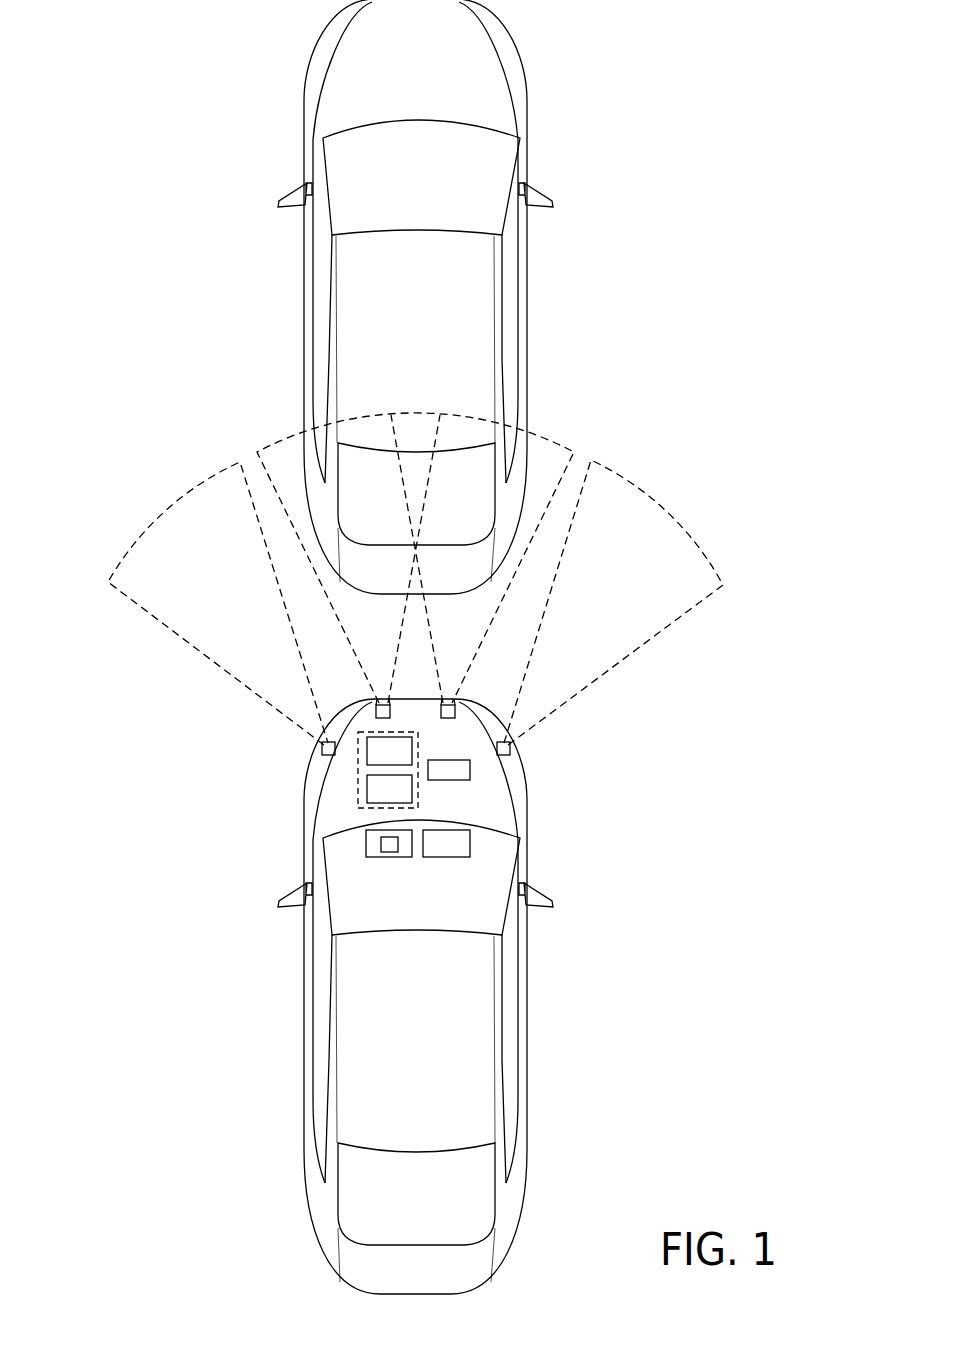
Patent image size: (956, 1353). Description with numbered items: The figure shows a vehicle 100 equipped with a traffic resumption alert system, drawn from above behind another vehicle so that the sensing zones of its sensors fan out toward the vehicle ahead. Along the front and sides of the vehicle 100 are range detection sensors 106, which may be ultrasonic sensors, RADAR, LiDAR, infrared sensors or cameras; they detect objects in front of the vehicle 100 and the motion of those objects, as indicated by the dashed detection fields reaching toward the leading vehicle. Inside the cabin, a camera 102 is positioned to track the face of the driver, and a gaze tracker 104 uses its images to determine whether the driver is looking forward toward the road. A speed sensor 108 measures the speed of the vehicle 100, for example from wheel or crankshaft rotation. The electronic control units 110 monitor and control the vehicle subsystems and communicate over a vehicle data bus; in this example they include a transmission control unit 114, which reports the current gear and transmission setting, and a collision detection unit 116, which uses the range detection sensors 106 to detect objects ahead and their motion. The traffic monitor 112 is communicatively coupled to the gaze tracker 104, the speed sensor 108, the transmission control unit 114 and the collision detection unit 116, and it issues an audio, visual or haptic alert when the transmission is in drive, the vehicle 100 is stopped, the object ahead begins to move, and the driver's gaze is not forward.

The vehicle 100 is at (526, 1158).
The camera 102 is at (390, 853).
The gaze tracker 104 is at (372, 858).
The range detection sensors 106 is at (385, 703).
The speed sensor 108 is at (470, 770).
The electronic control units (ECUs) 110 is at (357, 770).
The traffic monitor 112 is at (470, 843).
The transmission control unit 114 is at (412, 750).
The collision detection unit 116 is at (412, 789).